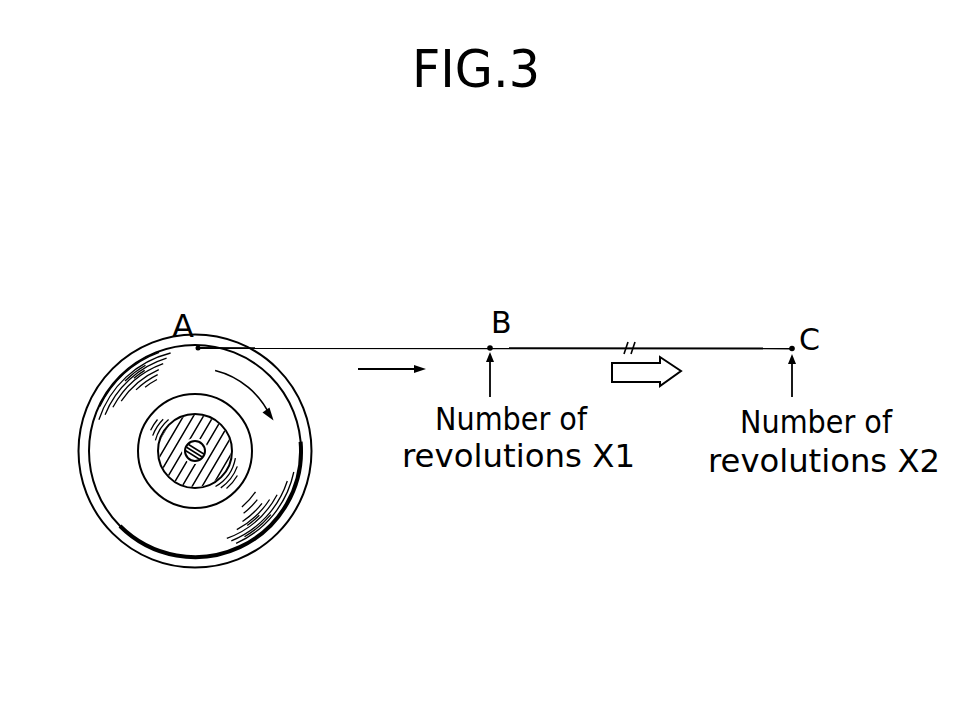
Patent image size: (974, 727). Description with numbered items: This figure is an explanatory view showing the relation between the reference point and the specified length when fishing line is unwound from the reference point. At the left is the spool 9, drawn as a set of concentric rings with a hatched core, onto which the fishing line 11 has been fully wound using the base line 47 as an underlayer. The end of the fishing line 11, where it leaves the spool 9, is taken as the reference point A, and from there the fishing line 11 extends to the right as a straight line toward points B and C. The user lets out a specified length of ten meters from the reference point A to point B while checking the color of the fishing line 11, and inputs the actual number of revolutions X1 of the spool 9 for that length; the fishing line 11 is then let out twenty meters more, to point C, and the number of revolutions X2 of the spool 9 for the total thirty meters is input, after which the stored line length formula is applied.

The spool 9 is at (177, 488).
The fishing line 11 is at (260, 520).
The base line 47 is at (242, 458).